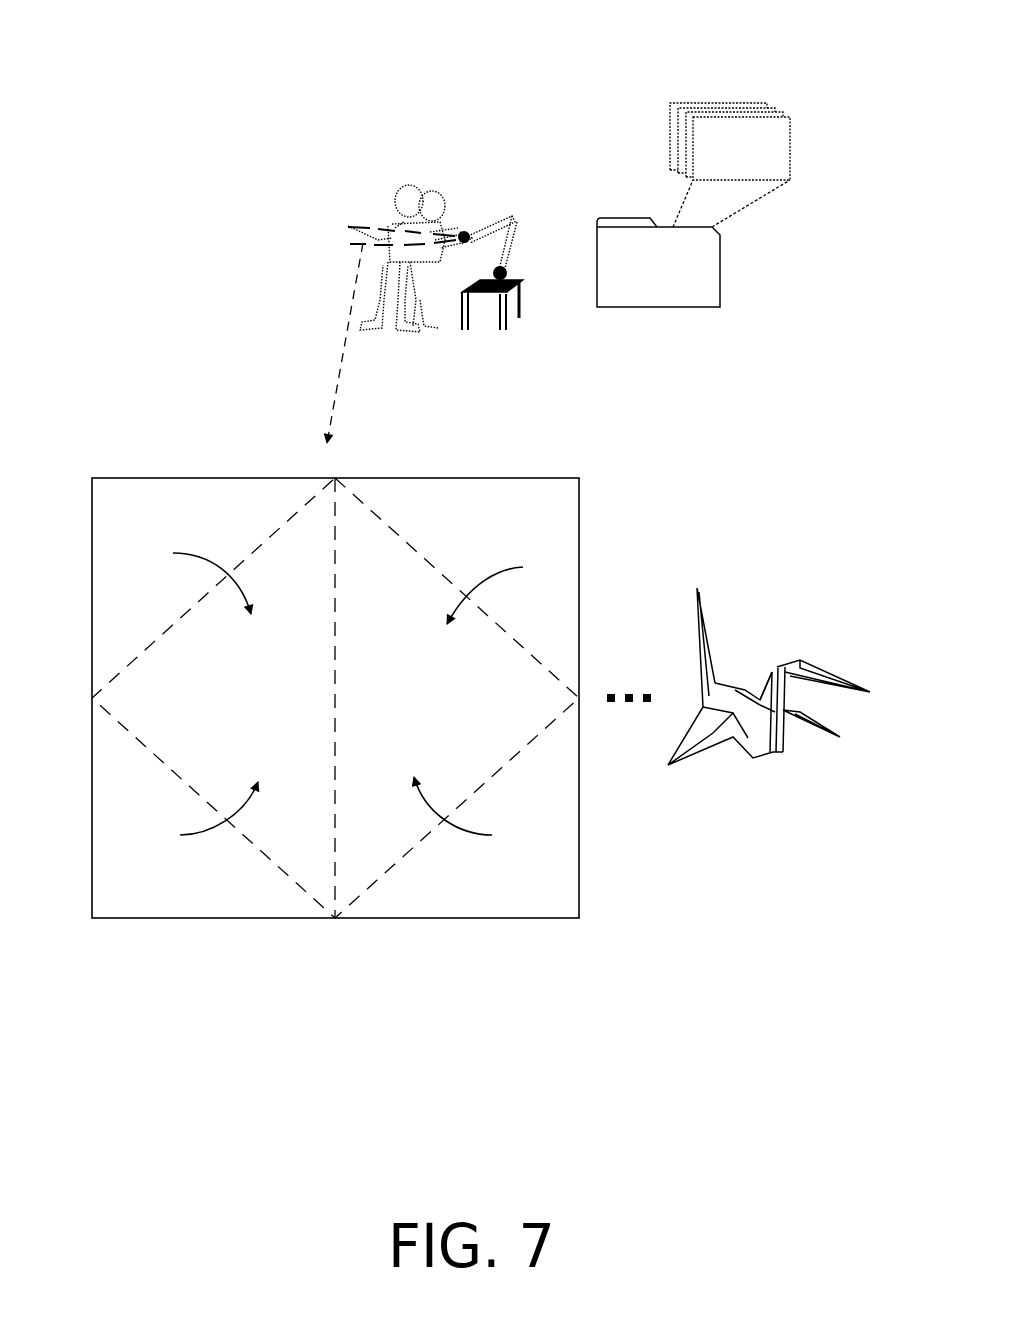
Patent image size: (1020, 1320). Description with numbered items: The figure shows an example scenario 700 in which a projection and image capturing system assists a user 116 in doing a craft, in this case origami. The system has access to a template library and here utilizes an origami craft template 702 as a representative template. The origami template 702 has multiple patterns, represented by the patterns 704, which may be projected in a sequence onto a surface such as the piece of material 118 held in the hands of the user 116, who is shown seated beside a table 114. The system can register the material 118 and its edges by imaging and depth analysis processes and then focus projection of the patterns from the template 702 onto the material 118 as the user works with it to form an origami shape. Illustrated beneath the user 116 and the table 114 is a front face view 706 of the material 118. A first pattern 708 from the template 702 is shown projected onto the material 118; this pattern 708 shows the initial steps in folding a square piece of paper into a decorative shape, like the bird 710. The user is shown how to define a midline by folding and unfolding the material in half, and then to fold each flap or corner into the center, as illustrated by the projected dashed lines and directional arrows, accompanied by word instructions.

The example scenario 700 is at (767, 40).
The user 116 is at (413, 210).
The table 114 is at (502, 303).
The piece of material 118 is at (363, 243).
The front face view 706 is at (269, 987).
The first pattern 708 is at (240, 880).
The bird 710 is at (783, 730).
The origami craft template 702 is at (660, 307).
The patterns 704 is at (670, 150).